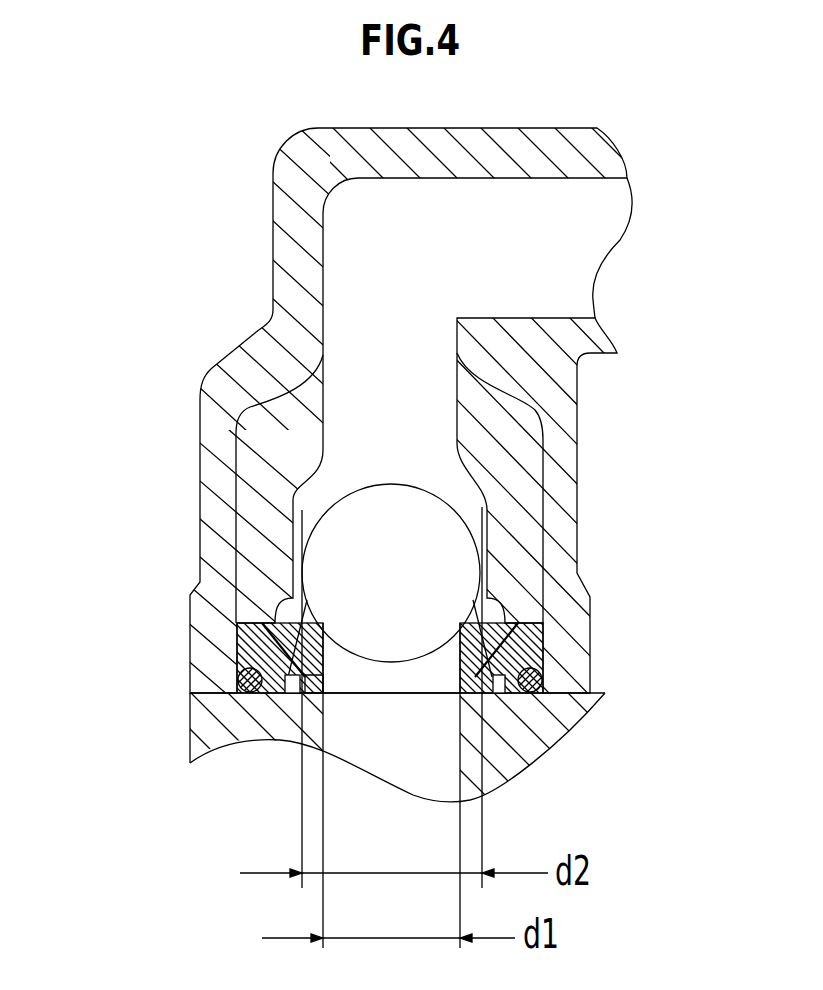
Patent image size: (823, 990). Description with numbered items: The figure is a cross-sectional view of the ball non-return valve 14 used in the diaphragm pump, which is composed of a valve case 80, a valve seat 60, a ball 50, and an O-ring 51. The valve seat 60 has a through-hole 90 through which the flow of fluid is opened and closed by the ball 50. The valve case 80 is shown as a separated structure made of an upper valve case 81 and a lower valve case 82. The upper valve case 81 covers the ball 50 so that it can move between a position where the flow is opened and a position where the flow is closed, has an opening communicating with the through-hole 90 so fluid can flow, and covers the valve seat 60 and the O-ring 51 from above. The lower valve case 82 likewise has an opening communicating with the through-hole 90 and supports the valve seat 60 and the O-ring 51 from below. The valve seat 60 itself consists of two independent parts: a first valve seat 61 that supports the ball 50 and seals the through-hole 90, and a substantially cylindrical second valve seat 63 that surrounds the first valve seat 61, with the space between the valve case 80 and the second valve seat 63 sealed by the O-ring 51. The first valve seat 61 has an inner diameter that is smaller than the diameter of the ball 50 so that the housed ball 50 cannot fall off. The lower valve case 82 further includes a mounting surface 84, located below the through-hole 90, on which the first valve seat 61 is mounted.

The ball non-return valve 14 is at (186, 464).
The ball 50 is at (385, 550).
The O-ring 51 is at (205, 702).
The valve seat 60 is at (324, 628).
The first valve seat 61 is at (278, 615).
The second valve seat 63 is at (245, 666).
The valve case 80 is at (455, 666).
The upper valve case 81 is at (560, 668).
The lower valve case 82 is at (560, 716).
The mounting surface 84 is at (300, 686).
The through-hole 90 is at (393, 680).